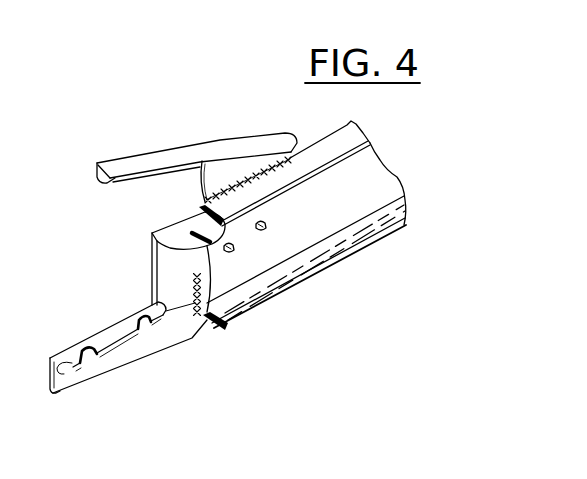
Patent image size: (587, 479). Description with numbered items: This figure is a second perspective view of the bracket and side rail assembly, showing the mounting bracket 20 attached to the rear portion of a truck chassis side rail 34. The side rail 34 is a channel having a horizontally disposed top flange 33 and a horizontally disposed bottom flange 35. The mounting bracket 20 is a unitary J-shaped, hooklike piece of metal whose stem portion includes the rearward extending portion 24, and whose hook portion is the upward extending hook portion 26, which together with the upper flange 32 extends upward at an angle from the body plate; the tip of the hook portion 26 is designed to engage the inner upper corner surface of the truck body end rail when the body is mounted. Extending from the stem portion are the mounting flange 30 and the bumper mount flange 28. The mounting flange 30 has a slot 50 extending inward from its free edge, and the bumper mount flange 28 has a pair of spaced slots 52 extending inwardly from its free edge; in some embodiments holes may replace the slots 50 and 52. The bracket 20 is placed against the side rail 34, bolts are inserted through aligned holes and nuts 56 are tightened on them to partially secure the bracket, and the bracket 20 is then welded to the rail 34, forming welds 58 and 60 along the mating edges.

The mounting bracket 20 is at (135, 141).
The rearward extending portion 24 is at (112, 369).
The upward extending hook portion 26 is at (218, 180).
The bumper mount flange 28 is at (103, 338).
The mounting flange 30 is at (170, 233).
The upper flange 32 is at (116, 163).
The top flange 33 is at (366, 137).
The side rail 34 is at (372, 184).
The bottom flange 35 is at (330, 255).
The slot 50 is at (207, 322).
The slots 52 is at (150, 327).
The nuts 56 is at (278, 233).
The weld 58 is at (190, 290).
The weld 60 is at (257, 176).